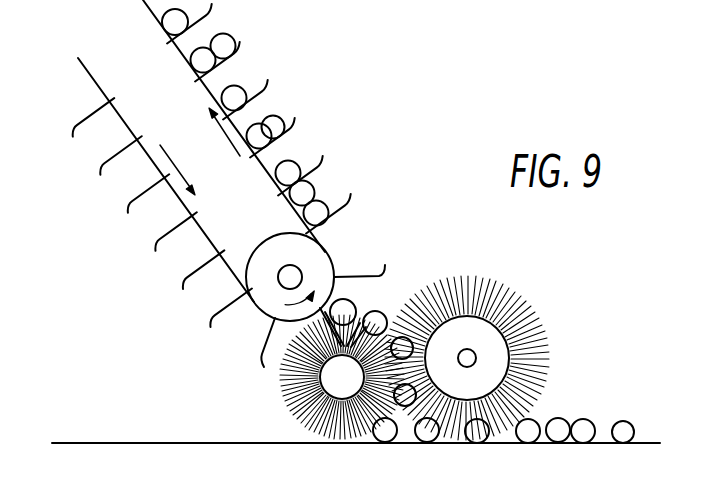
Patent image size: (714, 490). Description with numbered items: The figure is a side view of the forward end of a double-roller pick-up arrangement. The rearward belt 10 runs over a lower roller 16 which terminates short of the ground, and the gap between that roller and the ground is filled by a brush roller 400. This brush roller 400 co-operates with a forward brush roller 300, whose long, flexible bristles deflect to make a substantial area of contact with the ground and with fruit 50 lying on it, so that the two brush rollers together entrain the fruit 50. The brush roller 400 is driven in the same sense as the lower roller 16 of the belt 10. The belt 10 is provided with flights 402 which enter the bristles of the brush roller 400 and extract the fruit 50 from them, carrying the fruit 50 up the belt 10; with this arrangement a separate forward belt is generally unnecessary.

The rearward belt 10 is at (146, 31).
The lower roller 16 is at (266, 278).
The fruit 50 is at (238, 96).
The forward brush roller 300 is at (563, 356).
The brush roller 400 is at (268, 381).
The flights 402 is at (385, 266).